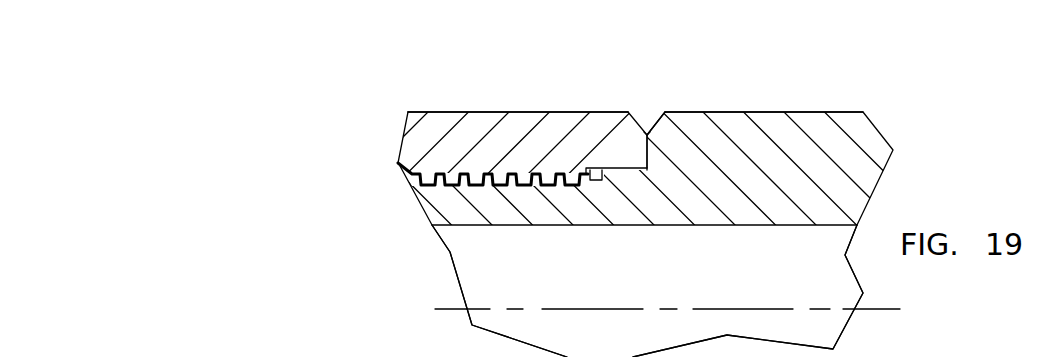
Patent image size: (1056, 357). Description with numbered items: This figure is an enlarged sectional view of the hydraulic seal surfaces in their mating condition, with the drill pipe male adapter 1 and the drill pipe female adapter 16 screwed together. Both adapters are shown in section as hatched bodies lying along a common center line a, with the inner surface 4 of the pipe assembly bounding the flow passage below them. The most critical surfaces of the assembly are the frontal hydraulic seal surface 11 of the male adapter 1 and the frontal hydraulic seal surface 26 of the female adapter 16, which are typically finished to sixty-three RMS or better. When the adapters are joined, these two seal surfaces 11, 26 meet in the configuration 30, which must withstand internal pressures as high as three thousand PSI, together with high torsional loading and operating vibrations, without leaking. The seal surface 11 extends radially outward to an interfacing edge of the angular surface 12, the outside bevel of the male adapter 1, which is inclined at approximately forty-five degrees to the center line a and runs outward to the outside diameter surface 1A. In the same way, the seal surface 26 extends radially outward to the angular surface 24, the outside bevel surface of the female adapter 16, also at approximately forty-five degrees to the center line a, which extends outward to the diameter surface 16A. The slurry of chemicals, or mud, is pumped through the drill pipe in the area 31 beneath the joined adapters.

The drill pipe male adapter 1 is at (846, 104).
The outside diameter surface 1A is at (830, 112).
The inner surface 4 is at (673, 226).
The frontal hydraulic seal surface 11 is at (650, 140).
The outside bevel 12 is at (650, 130).
The drill pipe female adapter 16 is at (450, 105).
The diameter surface 16A is at (486, 112).
The outside bevel surface 24 is at (644, 130).
The frontal hydraulic seal surface 26 is at (649, 140).
The joined seal configuration 30 is at (647, 130).
The mud flow area 31 is at (543, 289).
The center line a is at (785, 309).